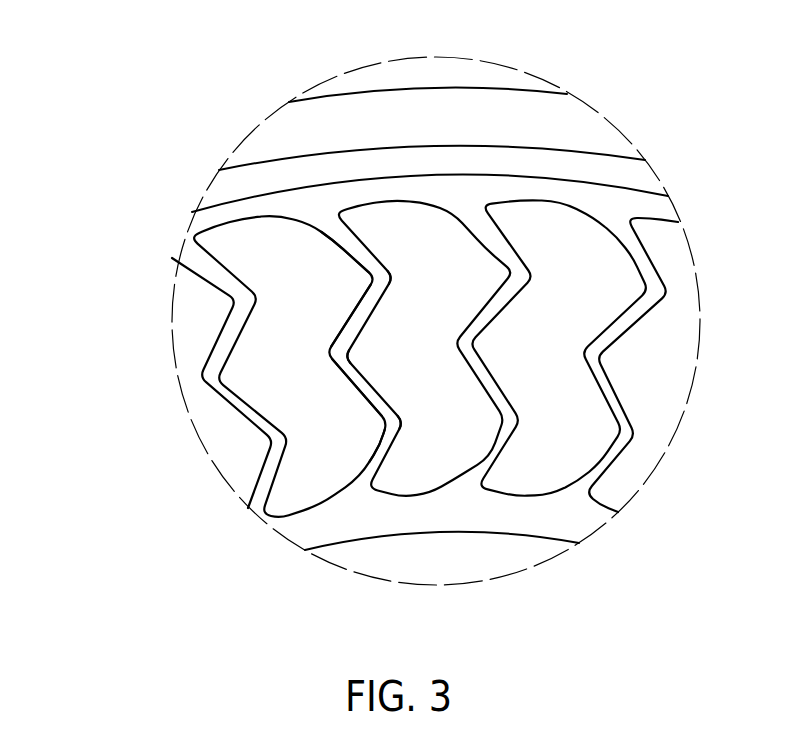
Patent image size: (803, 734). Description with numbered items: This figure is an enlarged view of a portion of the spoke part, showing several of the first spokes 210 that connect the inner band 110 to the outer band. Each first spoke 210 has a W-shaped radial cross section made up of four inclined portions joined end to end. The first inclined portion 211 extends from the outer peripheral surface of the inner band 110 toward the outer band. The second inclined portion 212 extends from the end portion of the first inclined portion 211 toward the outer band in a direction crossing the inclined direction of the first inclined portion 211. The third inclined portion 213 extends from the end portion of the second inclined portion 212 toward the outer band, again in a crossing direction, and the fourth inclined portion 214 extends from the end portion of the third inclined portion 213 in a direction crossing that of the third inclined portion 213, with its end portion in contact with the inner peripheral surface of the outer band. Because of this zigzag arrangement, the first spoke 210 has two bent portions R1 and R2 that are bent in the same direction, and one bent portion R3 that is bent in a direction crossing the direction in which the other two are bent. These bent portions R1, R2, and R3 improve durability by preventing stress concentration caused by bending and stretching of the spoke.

The inner band 110 is at (467, 513).
The first spoke 210 is at (87, 265).
The first inclined portion 211 is at (375, 450).
The second inclined portion 212 is at (348, 378).
The third inclined portion 213 is at (352, 316).
The fourth inclined portion 214 is at (357, 251).
The bent portion R1 is at (398, 275).
The bent portion R2 is at (408, 420).
The bent portion R3 is at (350, 352).